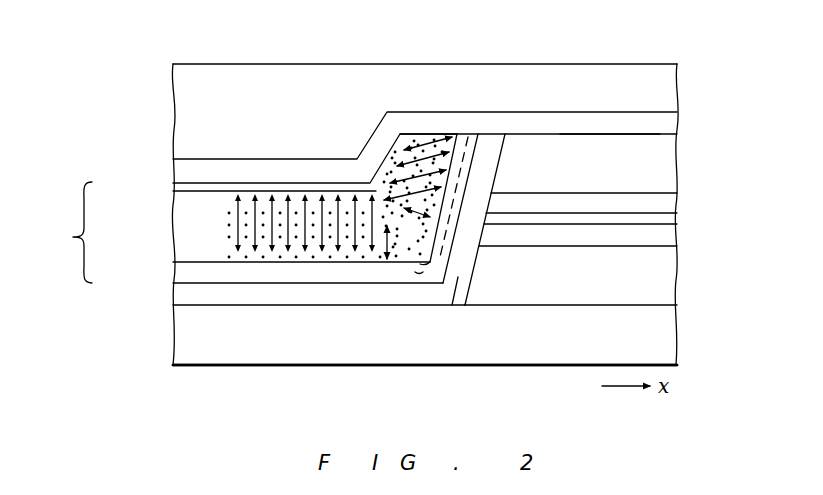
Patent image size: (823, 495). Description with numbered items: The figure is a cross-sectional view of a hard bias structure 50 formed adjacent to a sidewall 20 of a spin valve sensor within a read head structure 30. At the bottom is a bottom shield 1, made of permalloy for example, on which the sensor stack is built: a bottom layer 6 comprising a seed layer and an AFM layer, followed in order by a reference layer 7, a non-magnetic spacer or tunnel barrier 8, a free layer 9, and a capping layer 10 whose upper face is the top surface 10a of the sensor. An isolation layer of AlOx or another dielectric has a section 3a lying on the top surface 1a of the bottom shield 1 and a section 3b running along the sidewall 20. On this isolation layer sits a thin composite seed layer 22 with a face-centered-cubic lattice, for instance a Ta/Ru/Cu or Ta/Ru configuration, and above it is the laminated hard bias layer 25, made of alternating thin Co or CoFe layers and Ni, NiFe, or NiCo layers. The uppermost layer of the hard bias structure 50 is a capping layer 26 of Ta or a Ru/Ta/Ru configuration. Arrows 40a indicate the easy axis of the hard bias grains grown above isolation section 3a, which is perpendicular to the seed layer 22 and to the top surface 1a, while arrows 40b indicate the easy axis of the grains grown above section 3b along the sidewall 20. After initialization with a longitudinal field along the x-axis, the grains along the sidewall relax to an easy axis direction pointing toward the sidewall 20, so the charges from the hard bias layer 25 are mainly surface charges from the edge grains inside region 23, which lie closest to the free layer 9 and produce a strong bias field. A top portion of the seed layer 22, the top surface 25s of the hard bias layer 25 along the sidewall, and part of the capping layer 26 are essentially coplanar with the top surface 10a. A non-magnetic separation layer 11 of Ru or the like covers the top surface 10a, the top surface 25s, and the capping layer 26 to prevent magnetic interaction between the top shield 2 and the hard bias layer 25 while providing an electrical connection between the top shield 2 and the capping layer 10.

The bottom shield 1 is at (668, 336).
The top surface of the bottom shield 1a is at (202, 305).
The top shield 2 is at (668, 84).
The isolation layer section on the bottom shield 3a is at (178, 297).
The isolation layer section along the sidewall 3b is at (452, 305).
The bottom layer 6 is at (668, 280).
The reference layer 7 is at (668, 238).
The non-magnetic spacer or tunnel barrier 8 is at (668, 220).
The free layer 9 is at (668, 203).
The capping layer 10 is at (668, 162).
The top surface of the sensor 10a is at (608, 134).
The non-magnetic separation layer 11 is at (668, 122).
The sidewall 20 is at (495, 153).
The composite seed layer 22 is at (178, 275).
The region of edge grains 23 is at (458, 130).
The hard bias layer 25 is at (178, 223).
The top surface of the hard bias layer 25s is at (427, 134).
The capping layer of the hard bias structure 26 is at (178, 187).
The read head structure 30 is at (690, 56).
The easy axis arrows above isolation layer section 3a 40a is at (233, 220).
The easy axis arrows above isolation layer section 3b 40b is at (402, 134).
The hard bias structure 50 is at (66, 232).